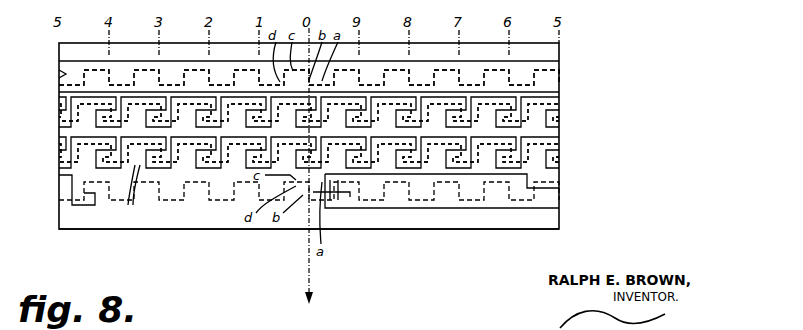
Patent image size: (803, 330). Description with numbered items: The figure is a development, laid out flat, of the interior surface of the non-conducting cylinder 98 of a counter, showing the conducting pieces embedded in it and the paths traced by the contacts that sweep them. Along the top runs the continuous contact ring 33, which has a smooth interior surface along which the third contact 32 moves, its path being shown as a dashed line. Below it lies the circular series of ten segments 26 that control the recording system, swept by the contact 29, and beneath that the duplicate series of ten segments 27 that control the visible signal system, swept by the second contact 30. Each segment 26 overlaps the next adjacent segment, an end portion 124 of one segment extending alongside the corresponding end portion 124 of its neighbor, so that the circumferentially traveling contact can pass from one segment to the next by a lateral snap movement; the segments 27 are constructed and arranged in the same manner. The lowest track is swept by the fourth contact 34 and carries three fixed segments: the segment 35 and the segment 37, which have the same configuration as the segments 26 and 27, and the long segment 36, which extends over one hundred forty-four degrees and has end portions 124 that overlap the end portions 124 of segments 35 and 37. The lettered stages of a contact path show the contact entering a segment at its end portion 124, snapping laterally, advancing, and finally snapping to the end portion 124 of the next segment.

The segments 26 is at (82, 104).
The segments 27 is at (82, 143).
The contact 29 is at (561, 104).
The second contact 30 is at (561, 141).
The third contact 32 is at (561, 71).
The contact ring 33 is at (57, 79).
The fourth contact 34 is at (561, 180).
The fixed segment 35 is at (60, 205).
The segment 36 is at (446, 204).
The fixed segment 37 is at (308, 199).
The non-conducting cylinder 98 is at (182, 224).
The end portion 124 is at (339, 184).